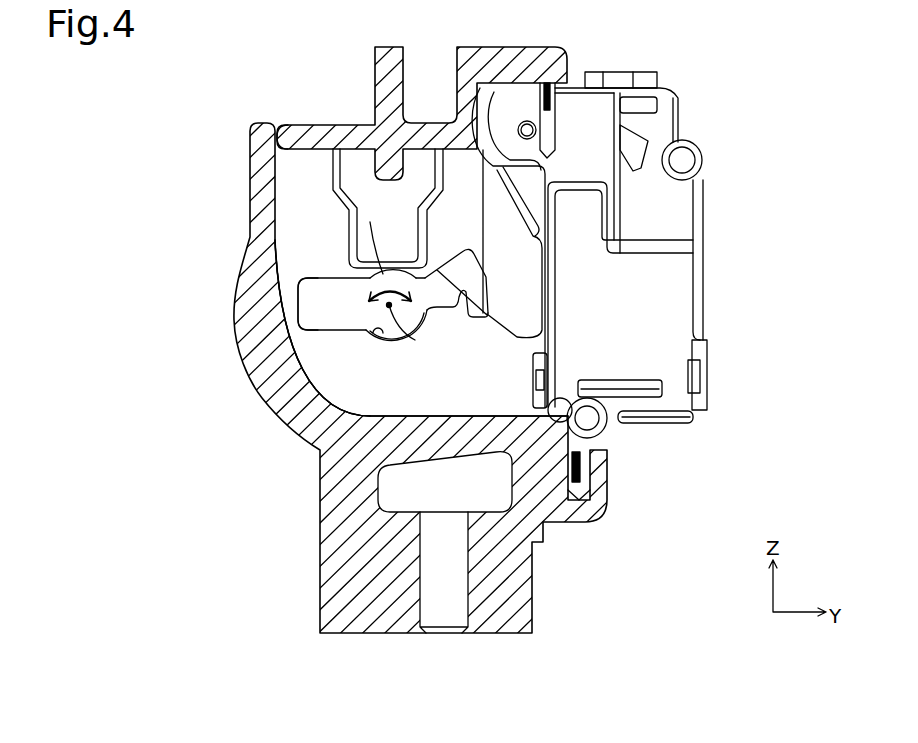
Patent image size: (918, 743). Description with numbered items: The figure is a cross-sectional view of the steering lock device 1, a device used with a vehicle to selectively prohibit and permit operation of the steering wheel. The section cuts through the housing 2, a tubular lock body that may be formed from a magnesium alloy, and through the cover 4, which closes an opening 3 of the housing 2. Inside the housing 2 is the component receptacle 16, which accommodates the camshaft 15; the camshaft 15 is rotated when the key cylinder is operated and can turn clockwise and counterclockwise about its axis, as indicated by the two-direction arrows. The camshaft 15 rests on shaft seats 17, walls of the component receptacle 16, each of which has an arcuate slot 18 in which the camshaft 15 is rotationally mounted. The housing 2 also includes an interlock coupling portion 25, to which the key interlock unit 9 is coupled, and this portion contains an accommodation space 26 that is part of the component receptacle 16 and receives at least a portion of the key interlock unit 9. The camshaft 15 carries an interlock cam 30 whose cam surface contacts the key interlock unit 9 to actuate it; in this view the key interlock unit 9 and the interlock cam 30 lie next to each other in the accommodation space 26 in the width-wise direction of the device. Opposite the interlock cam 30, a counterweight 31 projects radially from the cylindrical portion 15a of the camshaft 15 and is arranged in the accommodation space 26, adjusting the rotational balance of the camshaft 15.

The steering lock device 1 is at (228, 56).
The housing 2 is at (258, 388).
The opening 3 is at (285, 140).
The cover 4 is at (327, 124).
The key interlock unit 9 is at (663, 80).
The camshaft 15 is at (372, 277).
The cylindrical portion 15a is at (389, 274).
The component receptacle 16 is at (278, 328).
The shaft seat 17 is at (315, 352).
The arcuate slot 18 is at (378, 337).
The interlock coupling portion 25 is at (573, 405).
The accommodation space 26 is at (283, 263).
The interlock cam 30 is at (451, 253).
The counterweight 31 is at (316, 282).